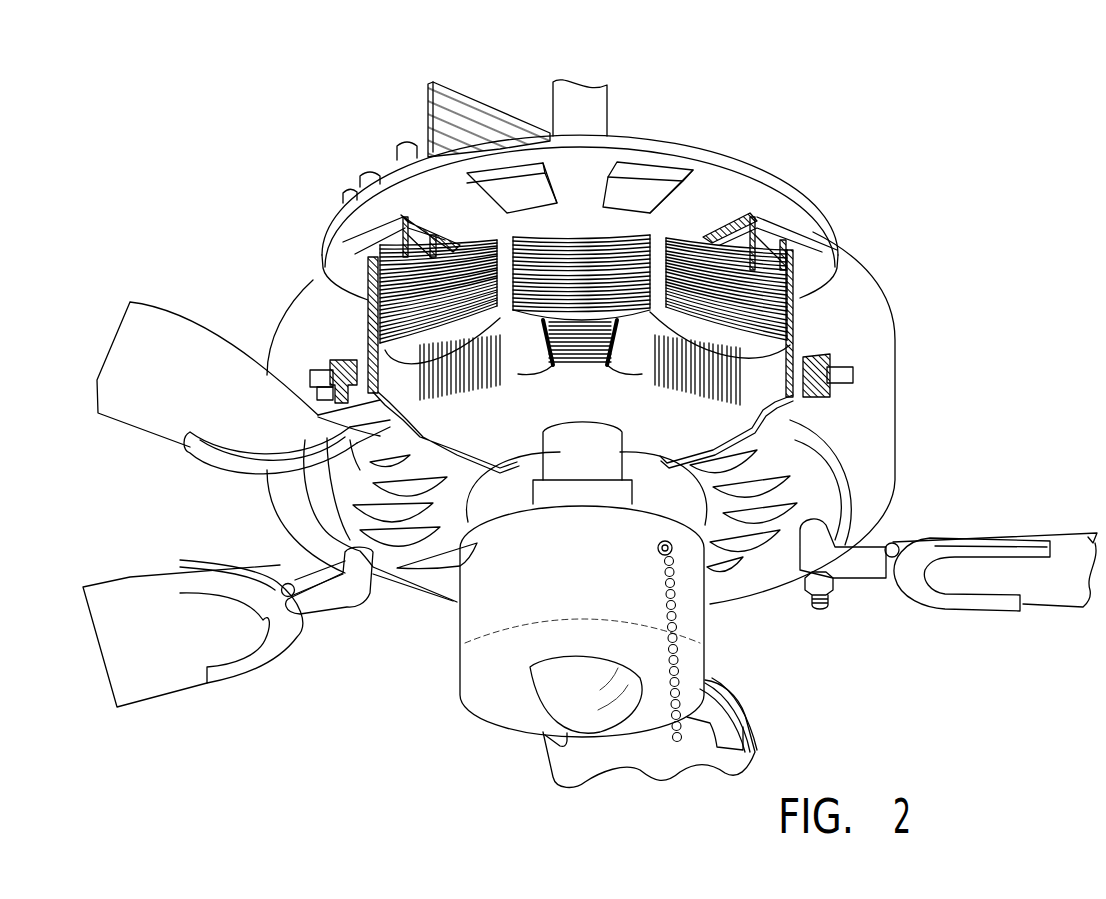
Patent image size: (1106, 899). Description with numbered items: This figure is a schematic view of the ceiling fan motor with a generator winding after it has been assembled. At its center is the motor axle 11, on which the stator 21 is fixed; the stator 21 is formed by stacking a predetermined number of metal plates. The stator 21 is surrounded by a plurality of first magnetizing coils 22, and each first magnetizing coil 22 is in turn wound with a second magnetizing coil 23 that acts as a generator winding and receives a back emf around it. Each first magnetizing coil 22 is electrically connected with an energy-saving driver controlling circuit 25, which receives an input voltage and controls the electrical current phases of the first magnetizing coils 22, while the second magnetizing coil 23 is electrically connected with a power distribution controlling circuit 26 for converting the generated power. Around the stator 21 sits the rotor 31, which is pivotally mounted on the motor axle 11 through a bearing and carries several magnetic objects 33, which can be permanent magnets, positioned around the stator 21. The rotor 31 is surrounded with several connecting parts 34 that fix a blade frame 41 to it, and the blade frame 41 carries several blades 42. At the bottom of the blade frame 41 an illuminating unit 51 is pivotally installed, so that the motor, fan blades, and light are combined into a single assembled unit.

The motor axle 11 is at (608, 88).
The stator 21 is at (515, 240).
The first magnetizing coil 22 is at (590, 323).
The second magnetizing coil 23 is at (563, 350).
The energy-saving driver controlling circuit 25 is at (507, 170).
The power distribution controlling circuit 26 is at (662, 170).
The rotor 31 is at (873, 313).
The magnetic object 33 is at (370, 300).
The connecting part 34 is at (847, 370).
The blade frame 41 is at (837, 465).
The blade 42 is at (1075, 533).
The illuminating unit 51 is at (547, 700).